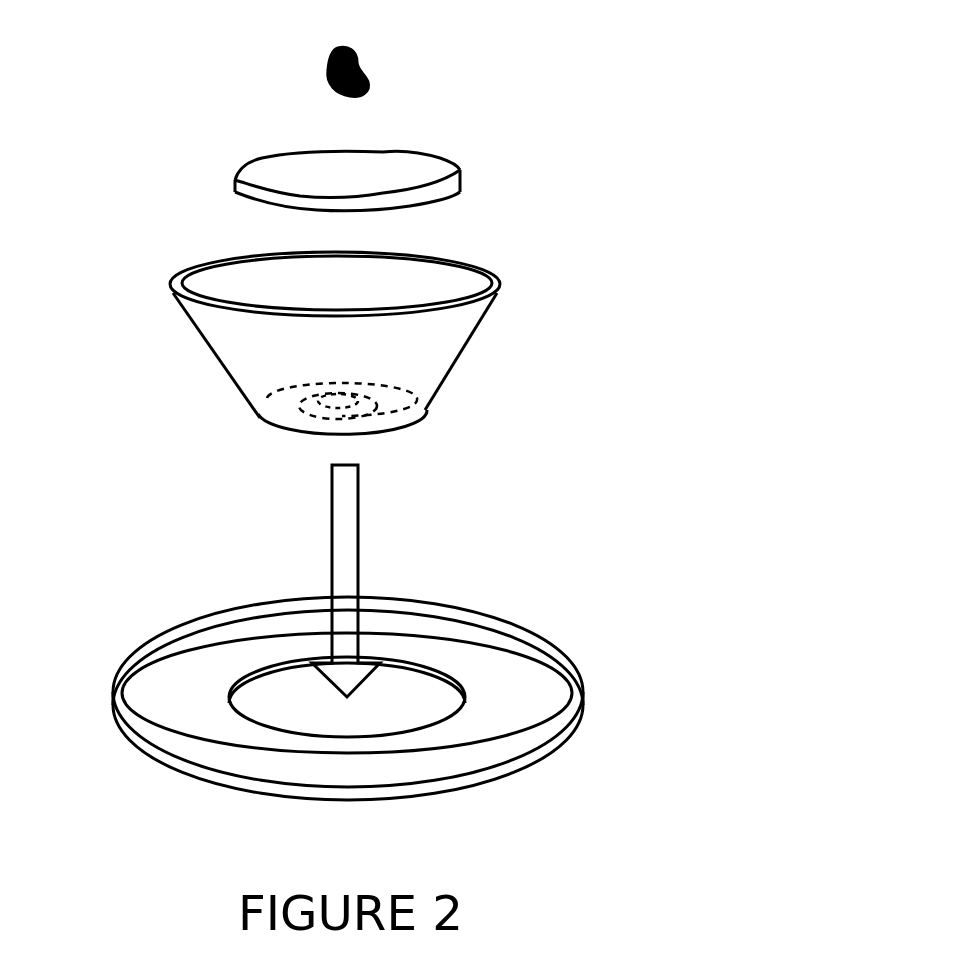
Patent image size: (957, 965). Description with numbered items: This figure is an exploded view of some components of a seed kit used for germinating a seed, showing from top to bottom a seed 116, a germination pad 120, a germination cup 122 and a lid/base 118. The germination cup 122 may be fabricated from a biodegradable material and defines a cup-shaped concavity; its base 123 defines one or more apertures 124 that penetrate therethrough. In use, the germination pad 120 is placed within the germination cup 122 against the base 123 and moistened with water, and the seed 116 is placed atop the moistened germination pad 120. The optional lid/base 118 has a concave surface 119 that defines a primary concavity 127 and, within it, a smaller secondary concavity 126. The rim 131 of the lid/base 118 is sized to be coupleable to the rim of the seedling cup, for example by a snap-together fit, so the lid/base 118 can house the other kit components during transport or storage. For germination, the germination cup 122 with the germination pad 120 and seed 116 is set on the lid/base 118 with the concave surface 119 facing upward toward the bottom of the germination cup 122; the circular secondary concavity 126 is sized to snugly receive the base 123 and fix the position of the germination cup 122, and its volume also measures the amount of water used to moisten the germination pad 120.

The seed 116 is at (367, 80).
The germination pad 120 is at (460, 172).
The germination cup 122 is at (500, 288).
The base 123 is at (268, 415).
The apertures 124 is at (357, 406).
The rim 131 is at (443, 598).
The lid/base 118 is at (555, 668).
The concave surface 119 is at (523, 643).
The secondary concavity 126 is at (405, 707).
The primary concavity 127 is at (185, 690).